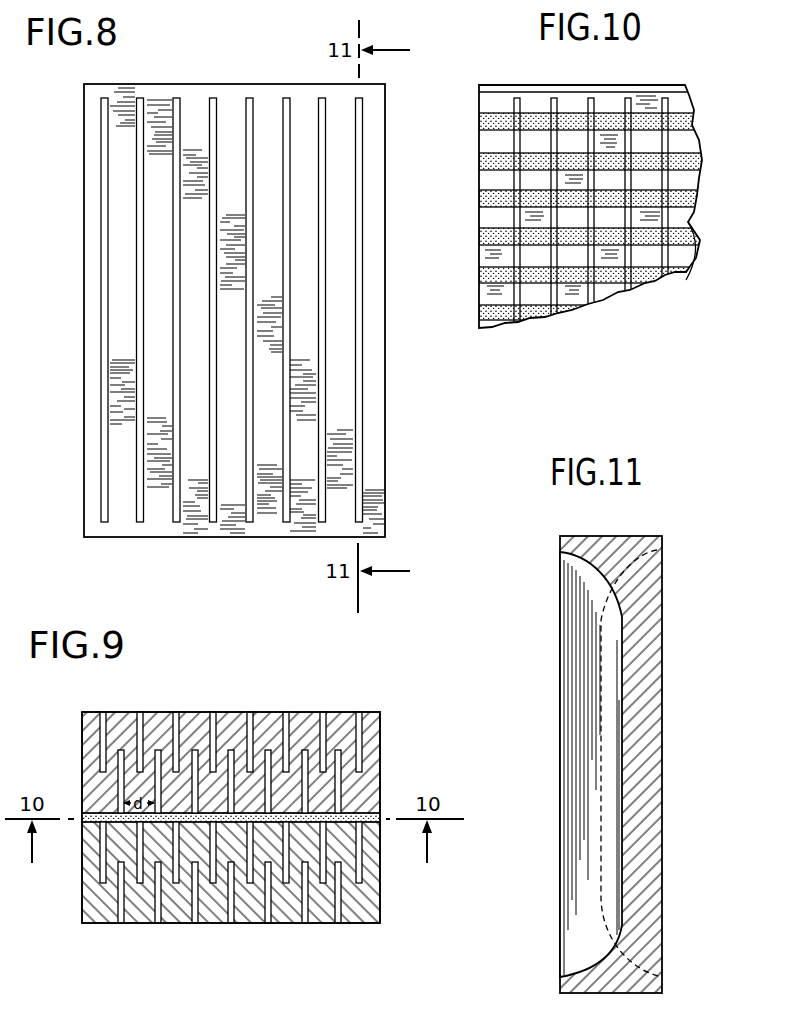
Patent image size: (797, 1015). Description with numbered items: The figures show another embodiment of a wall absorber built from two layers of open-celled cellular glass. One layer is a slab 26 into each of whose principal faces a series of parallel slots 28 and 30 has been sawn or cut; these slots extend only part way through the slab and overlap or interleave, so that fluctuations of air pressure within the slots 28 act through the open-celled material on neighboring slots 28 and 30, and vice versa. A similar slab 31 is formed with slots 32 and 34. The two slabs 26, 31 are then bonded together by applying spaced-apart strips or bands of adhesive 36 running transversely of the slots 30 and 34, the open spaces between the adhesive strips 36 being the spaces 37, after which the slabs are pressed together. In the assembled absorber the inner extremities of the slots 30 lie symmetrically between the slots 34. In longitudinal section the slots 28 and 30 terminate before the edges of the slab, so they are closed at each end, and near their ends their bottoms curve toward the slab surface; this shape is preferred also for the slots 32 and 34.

In FIG. 8, the slab 26 is at (230, 112).
In FIG. 9, the slab 26 is at (372, 723).
In FIG. 11, the slab 26 is at (657, 590).
In FIG. 8, the slots 28 is at (177, 97).
In FIG. 9, the slots 28 is at (284, 714).
In FIG. 11, the slots 28 is at (580, 660).
In FIG. 9, the slots 30 is at (336, 795).
In FIG. 10, the slots 30 is at (555, 97).
In FIG. 11, the slots 30 is at (603, 682).
In FIG. 9, the slab 31 is at (365, 905).
In FIG. 9, the slots 32 is at (340, 913).
In FIG. 9, the slots 34 is at (330, 834).
In FIG. 9, the adhesive strips 36 is at (82, 818).
In FIG. 10, the adhesive strips 36 is at (482, 313).
In FIG. 10, the spaces between adhesive strips 37 is at (655, 291).